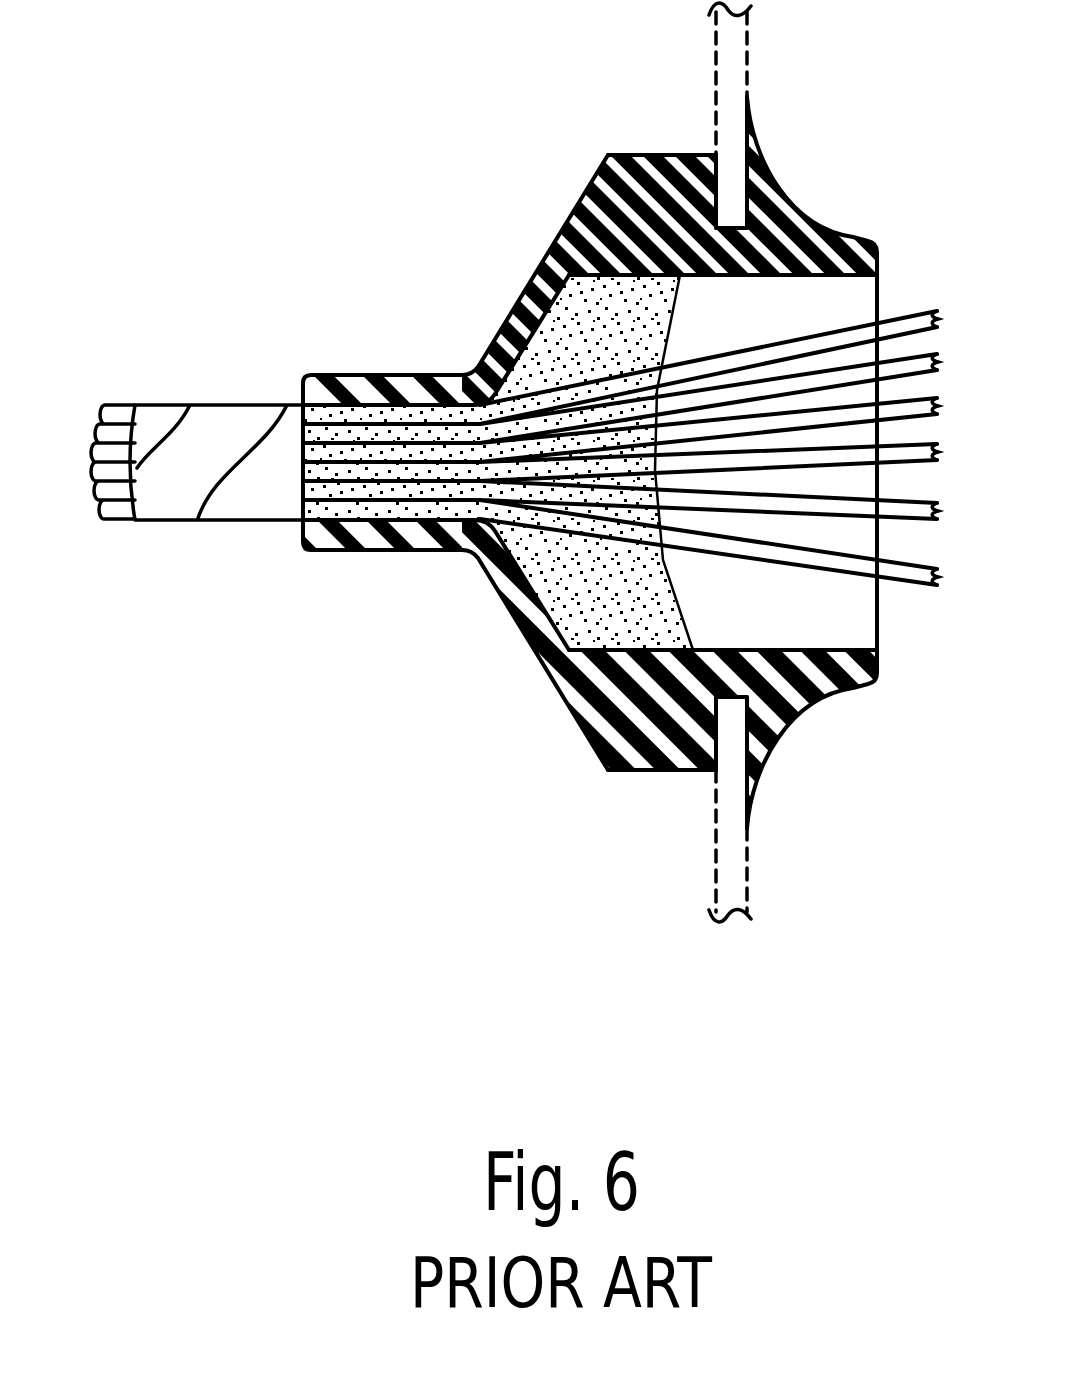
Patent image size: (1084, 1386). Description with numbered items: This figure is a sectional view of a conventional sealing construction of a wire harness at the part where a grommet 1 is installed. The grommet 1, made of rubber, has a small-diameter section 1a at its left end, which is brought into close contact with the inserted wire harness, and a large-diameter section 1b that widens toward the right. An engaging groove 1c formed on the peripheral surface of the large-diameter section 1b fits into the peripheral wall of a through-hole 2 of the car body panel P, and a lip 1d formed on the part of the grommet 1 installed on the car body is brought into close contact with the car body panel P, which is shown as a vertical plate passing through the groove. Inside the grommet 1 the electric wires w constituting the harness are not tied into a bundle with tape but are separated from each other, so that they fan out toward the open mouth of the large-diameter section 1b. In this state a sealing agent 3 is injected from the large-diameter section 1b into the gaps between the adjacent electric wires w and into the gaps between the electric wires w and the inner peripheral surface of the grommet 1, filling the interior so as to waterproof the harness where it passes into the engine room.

The grommet 1 is at (462, 782).
The small-diameter section 1a is at (367, 553).
The large-diameter section 1b is at (600, 162).
The engaging groove 1c is at (716, 195).
The lip 1d is at (772, 157).
The through-hole 2 is at (752, 230).
The sealing agent 3 is at (572, 598).
The car body panel P is at (737, 77).
The electric wires w is at (128, 518).